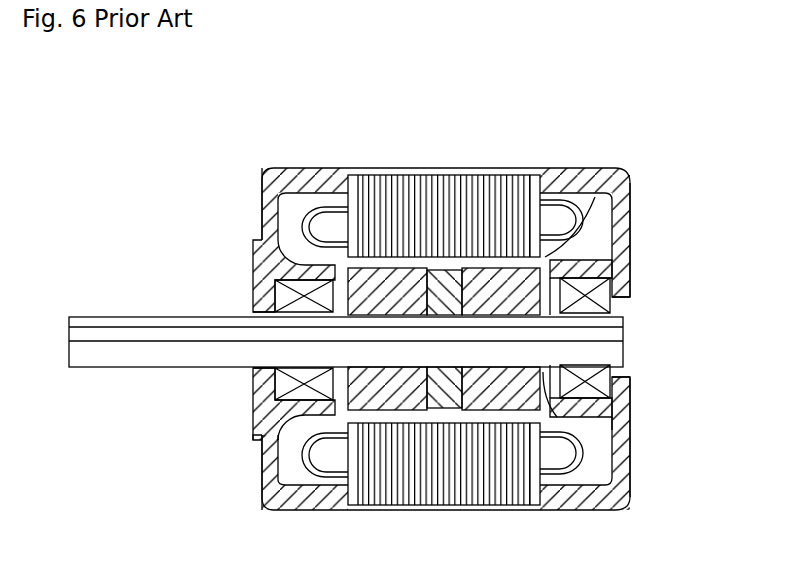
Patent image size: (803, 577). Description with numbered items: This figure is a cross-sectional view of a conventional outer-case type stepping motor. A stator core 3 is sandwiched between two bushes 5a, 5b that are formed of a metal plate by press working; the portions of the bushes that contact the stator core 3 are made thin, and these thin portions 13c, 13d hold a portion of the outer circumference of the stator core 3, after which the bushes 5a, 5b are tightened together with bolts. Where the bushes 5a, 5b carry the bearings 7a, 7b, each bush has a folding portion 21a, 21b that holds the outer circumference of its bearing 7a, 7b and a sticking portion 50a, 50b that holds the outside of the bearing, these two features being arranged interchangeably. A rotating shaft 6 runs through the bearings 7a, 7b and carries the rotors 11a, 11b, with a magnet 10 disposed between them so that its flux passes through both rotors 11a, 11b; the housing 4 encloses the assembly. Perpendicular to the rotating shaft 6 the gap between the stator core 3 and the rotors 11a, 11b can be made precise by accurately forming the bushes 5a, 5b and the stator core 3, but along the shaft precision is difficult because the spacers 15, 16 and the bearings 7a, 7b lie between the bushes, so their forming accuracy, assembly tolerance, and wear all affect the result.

The stator core 3 is at (390, 205).
The housing 4 is at (262, 184).
The bush 5a is at (287, 180).
The bush 5b is at (597, 180).
The rotating shaft 6 is at (88, 317).
The bearing 7a is at (253, 312).
The bearing 7b is at (633, 297).
The magnet 10 is at (446, 268).
The rotor 11a is at (305, 262).
The rotor 11b is at (575, 255).
The thin portion 13c is at (352, 173).
The thin portion 13d is at (533, 172).
The spacer 15 is at (605, 440).
The spacer 16 is at (257, 453).
The folding portion 21a is at (268, 272).
The folding portion 21b is at (612, 245).
The sticking portion 50a is at (253, 285).
The sticking portion 50b is at (608, 290).